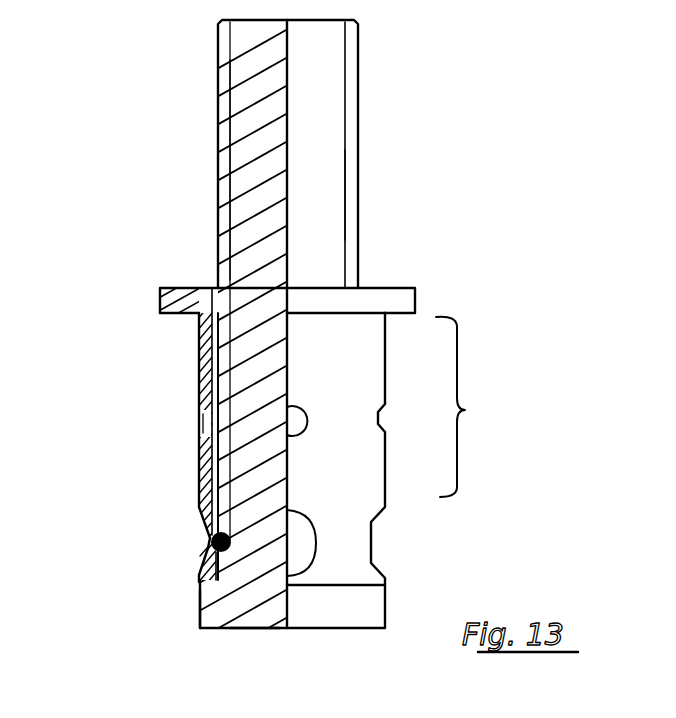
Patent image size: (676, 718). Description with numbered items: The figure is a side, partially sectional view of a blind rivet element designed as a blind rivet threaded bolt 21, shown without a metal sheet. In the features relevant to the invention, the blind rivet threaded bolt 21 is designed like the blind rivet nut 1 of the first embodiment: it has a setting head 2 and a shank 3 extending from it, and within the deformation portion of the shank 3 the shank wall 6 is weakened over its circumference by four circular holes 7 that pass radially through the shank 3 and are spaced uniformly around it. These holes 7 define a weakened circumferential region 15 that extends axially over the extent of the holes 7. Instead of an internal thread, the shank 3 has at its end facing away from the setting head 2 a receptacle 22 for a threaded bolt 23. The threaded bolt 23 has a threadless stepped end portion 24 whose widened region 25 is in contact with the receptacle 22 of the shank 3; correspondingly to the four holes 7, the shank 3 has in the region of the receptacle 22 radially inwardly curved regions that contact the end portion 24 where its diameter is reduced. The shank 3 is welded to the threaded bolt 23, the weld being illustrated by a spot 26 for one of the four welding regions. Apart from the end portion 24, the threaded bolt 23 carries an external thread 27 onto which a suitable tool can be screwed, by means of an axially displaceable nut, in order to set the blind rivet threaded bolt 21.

The blind rivet nut 1 is at (507, 322).
The setting head 2 is at (160, 300).
The shank 3 is at (372, 466).
The shank wall 6 is at (199, 343).
The holes 7 is at (199, 443).
The weakened circumferential region 15 is at (183, 411).
The blind rivet threaded bolt 21 is at (114, 487).
The receptacle 22 is at (199, 555).
The threaded bolt 23 is at (194, 208).
The stepped end portion 24 is at (245, 592).
The widened region 25 is at (208, 615).
The spot 26 is at (210, 540).
The external thread 27 is at (218, 152).